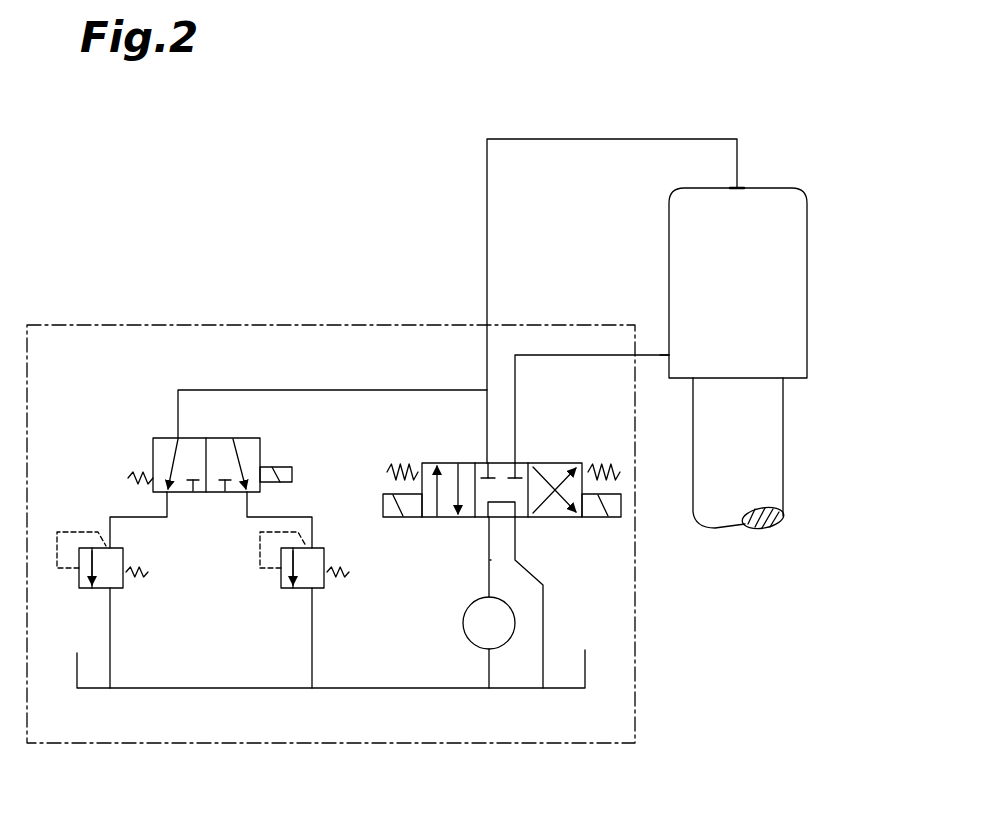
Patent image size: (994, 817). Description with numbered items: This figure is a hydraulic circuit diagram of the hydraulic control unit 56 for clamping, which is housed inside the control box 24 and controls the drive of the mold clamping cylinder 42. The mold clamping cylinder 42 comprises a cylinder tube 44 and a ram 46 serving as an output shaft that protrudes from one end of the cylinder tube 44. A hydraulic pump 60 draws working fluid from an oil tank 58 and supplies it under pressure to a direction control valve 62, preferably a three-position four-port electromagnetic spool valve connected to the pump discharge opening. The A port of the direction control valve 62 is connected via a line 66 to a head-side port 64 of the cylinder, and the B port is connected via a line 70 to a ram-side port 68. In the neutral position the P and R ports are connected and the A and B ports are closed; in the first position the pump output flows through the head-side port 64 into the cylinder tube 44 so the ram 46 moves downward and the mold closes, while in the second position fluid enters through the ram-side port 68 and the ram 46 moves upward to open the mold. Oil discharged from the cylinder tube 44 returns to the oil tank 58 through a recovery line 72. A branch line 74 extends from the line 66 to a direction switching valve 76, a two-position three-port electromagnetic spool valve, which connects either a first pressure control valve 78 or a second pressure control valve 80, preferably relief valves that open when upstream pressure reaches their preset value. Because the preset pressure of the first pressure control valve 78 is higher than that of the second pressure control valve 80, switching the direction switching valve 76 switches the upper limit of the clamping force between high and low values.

The control box 24 is at (263, 323).
The mold clamping cylinder 42 is at (770, 270).
The cylinder tube 44 is at (785, 263).
The ram 46 is at (770, 437).
The hydraulic control unit 56 is at (578, 597).
The oil tank 58 is at (586, 662).
The hydraulic pump 60 is at (463, 620).
The direction control valve 62 is at (437, 519).
The head-side port 64 is at (742, 188).
The line 66 is at (632, 138).
The ram-side port 68 is at (663, 362).
The line 70 is at (567, 355).
The recovery line 72 is at (532, 569).
The branch line 74 is at (385, 389).
The direction switching valve 76 is at (262, 440).
The first pressure control valve 78 is at (125, 554).
The second pressure control valve 80 is at (313, 547).